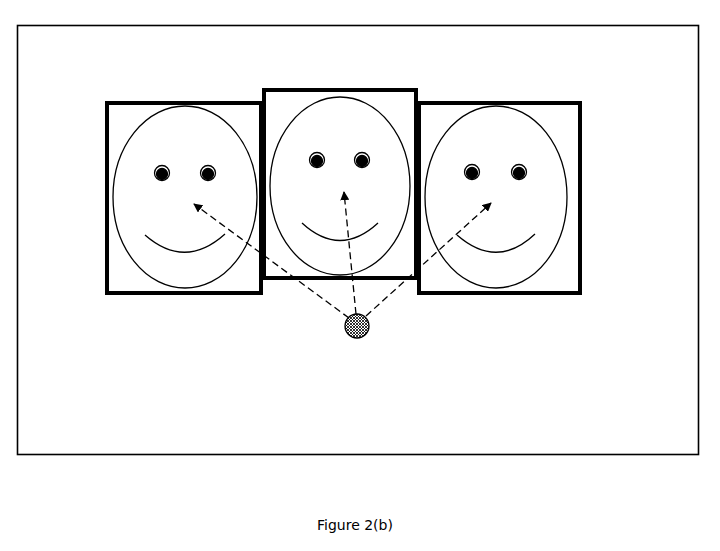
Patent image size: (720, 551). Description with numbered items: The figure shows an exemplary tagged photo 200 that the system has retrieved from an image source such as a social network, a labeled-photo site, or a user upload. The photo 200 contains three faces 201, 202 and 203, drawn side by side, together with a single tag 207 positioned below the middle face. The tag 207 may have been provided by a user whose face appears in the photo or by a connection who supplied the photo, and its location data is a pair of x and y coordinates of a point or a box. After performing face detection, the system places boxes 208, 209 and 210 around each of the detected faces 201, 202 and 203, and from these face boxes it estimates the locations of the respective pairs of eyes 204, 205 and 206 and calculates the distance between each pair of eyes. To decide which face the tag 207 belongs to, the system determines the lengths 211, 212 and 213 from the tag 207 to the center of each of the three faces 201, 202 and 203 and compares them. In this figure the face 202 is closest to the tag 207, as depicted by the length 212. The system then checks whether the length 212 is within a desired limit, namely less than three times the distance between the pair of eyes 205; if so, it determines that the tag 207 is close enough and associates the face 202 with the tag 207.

The tagged photo 200 is at (104, 24).
The face 201 is at (182, 289).
The face 202 is at (317, 263).
The face 203 is at (497, 288).
The pair of eyes 204 is at (202, 167).
The pair of eyes 205 is at (361, 152).
The pair of eyes 206 is at (525, 168).
The tag 207 is at (346, 333).
The box 208 is at (178, 101).
The box 209 is at (282, 88).
The box 210 is at (489, 101).
The length 211 is at (271, 257).
The length 212 is at (355, 248).
The length 213 is at (430, 253).